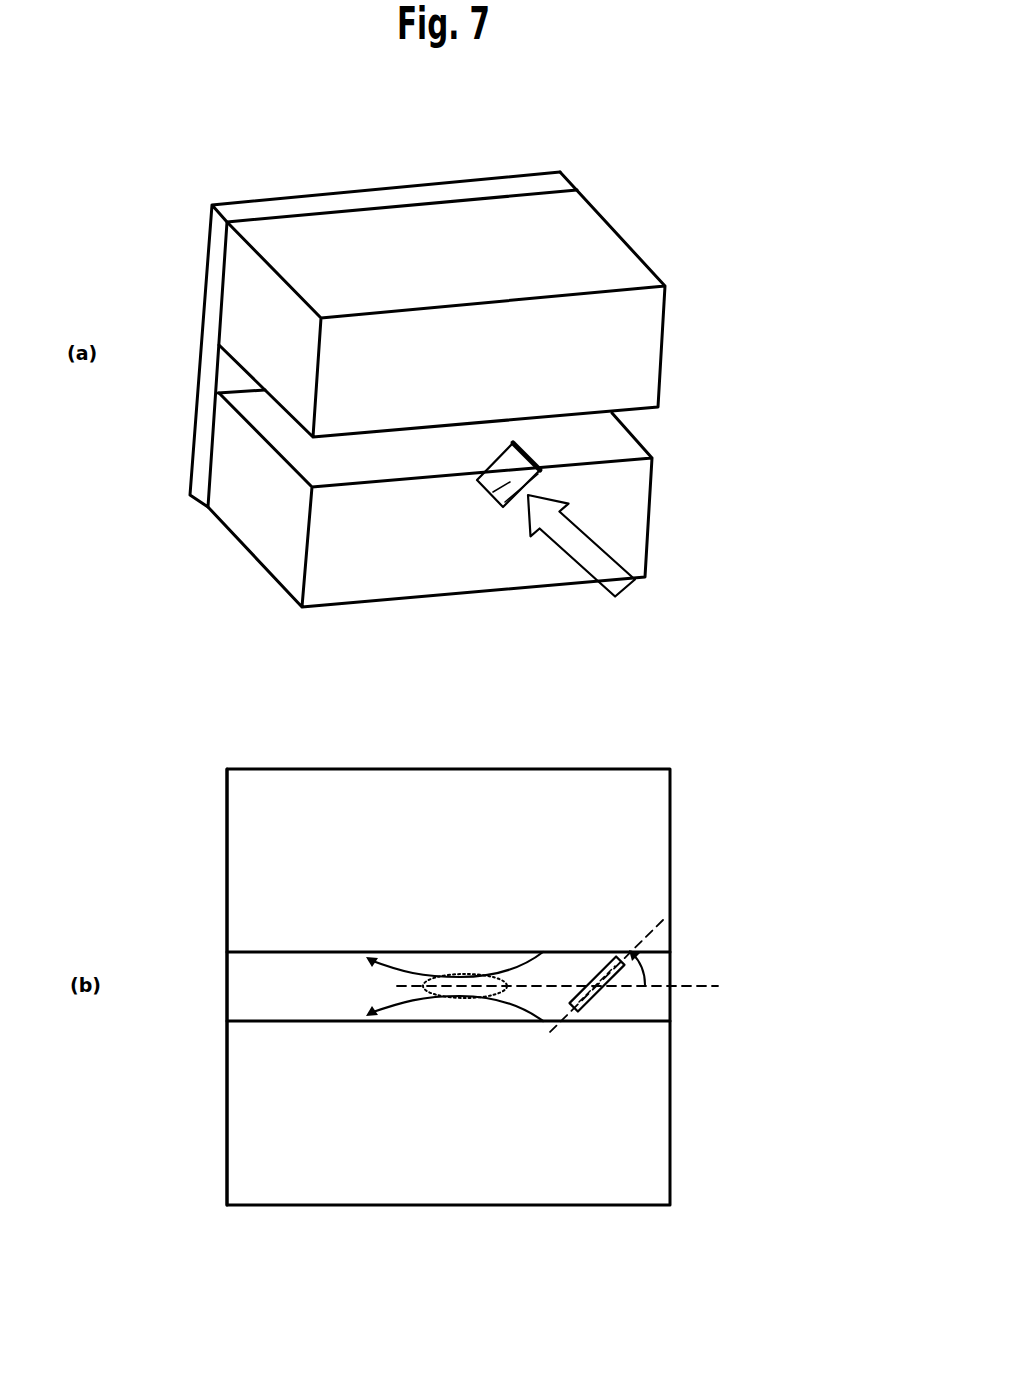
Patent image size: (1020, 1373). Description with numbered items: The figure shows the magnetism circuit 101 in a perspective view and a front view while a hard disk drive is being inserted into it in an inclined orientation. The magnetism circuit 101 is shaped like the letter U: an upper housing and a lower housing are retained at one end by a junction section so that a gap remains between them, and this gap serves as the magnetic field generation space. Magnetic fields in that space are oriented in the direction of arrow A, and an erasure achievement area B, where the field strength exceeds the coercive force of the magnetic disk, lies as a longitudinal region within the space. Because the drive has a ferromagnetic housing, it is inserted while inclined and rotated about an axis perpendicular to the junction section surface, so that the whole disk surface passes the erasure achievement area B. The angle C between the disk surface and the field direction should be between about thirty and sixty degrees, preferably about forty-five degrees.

The magnetism circuit 101 is at (465, 350).
The direction of magnetic fields A is at (518, 998).
The erasure achievement area B is at (450, 995).
The angle C is at (630, 957).